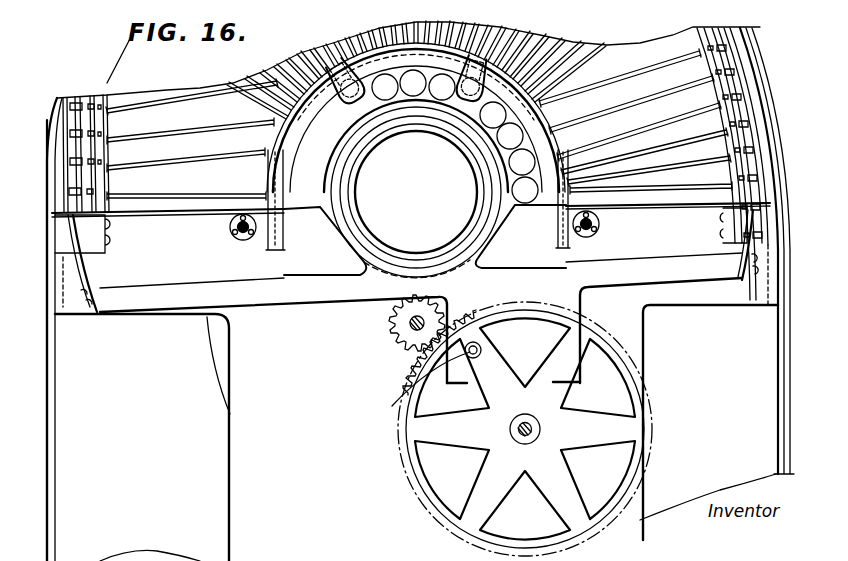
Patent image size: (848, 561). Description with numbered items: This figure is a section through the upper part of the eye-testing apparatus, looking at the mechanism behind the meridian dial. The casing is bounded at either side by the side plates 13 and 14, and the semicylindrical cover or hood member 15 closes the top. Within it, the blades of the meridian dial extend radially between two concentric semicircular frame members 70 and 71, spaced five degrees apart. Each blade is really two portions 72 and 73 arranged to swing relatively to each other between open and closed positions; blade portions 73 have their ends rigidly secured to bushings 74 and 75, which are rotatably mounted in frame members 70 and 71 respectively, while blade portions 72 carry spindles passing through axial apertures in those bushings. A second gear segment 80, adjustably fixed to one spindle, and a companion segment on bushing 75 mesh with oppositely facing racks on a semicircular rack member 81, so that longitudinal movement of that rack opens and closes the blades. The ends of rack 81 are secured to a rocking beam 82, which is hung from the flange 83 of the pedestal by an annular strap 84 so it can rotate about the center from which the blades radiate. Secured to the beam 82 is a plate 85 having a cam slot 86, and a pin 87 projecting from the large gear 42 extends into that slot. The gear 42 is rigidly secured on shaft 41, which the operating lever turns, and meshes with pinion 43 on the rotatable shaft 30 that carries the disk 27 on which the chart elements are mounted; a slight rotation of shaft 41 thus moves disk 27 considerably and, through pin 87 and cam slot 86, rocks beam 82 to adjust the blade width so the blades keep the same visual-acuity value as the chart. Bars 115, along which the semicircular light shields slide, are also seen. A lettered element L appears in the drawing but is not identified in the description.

The side plate 13 is at (778, 332).
The side plate 14 is at (48, 446).
The semicylindrical cover or hood member 15 is at (56, 116).
The disk 27 is at (210, 362).
The rotatable shaft 30 is at (413, 327).
The shaft 41 is at (521, 436).
The large gear 42 is at (401, 447).
The pinion 43 is at (392, 320).
The semicircular frame member 70 is at (459, 50).
The semicircular frame member 71 is at (696, 28).
The blade portion 72 is at (178, 196).
The blade portion 73 is at (663, 193).
The bushing 74 is at (276, 153).
The bushing 75 is at (86, 140).
The second gear segment 80 is at (763, 190).
The semicircular rack member 81 is at (88, 98).
The rocking beam 82 is at (278, 295).
The flange 83 is at (470, 237).
The annular strap 84 is at (341, 219).
The plate 85 is at (467, 372).
The cam slot 86 is at (530, 326).
The pin 87 is at (404, 394).
The bars 115 is at (238, 240).
The rollers L is at (212, 96).